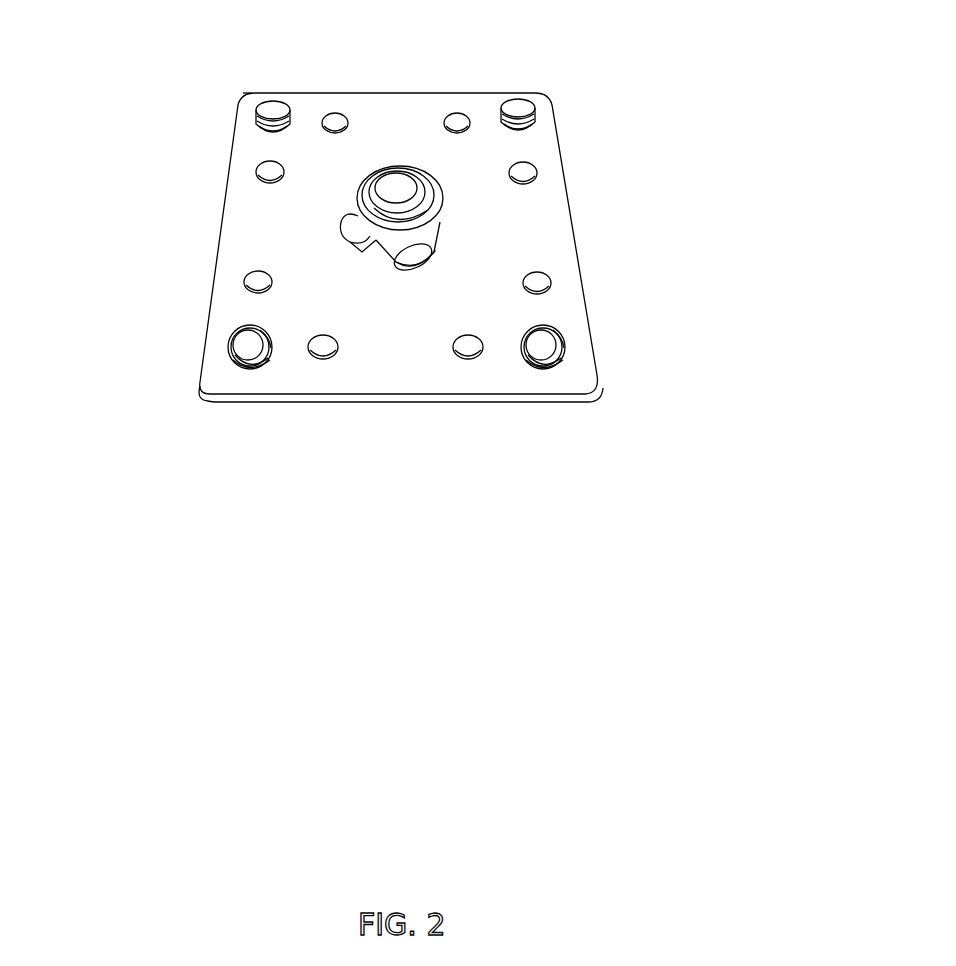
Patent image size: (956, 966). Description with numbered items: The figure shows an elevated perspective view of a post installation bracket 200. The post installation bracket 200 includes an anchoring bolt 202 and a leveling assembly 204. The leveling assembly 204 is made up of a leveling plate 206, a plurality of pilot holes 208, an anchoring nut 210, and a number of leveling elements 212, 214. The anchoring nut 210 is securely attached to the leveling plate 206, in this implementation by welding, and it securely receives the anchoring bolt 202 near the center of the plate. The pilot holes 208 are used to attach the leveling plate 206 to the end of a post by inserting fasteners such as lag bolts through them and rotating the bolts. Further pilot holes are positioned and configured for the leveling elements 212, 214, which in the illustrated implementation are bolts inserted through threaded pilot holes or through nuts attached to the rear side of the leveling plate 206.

The post installation bracket 200 is at (675, 832).
The anchoring bolt 202 is at (397, 188).
The leveling assembly 204 is at (203, 143).
The leveling plate 206 is at (219, 236).
The pilot holes 208 is at (548, 275).
The anchoring nut 210 is at (352, 226).
The leveling element 212 is at (228, 372).
The leveling element 214 is at (525, 377).